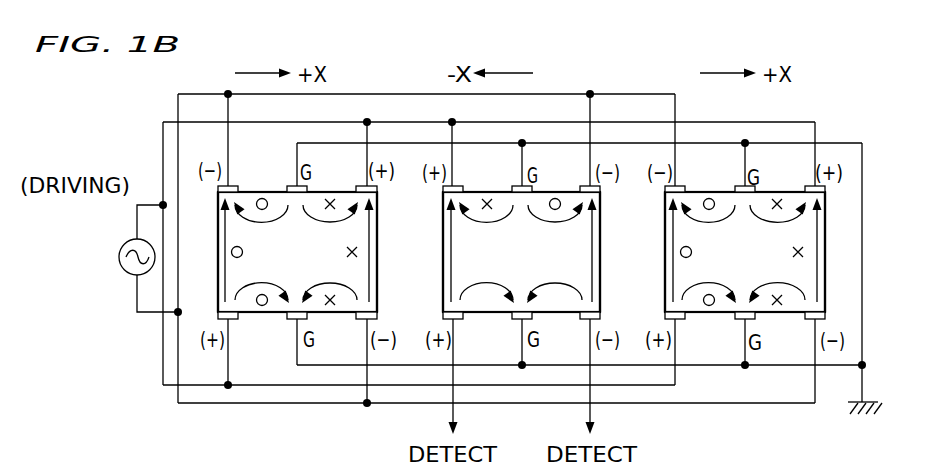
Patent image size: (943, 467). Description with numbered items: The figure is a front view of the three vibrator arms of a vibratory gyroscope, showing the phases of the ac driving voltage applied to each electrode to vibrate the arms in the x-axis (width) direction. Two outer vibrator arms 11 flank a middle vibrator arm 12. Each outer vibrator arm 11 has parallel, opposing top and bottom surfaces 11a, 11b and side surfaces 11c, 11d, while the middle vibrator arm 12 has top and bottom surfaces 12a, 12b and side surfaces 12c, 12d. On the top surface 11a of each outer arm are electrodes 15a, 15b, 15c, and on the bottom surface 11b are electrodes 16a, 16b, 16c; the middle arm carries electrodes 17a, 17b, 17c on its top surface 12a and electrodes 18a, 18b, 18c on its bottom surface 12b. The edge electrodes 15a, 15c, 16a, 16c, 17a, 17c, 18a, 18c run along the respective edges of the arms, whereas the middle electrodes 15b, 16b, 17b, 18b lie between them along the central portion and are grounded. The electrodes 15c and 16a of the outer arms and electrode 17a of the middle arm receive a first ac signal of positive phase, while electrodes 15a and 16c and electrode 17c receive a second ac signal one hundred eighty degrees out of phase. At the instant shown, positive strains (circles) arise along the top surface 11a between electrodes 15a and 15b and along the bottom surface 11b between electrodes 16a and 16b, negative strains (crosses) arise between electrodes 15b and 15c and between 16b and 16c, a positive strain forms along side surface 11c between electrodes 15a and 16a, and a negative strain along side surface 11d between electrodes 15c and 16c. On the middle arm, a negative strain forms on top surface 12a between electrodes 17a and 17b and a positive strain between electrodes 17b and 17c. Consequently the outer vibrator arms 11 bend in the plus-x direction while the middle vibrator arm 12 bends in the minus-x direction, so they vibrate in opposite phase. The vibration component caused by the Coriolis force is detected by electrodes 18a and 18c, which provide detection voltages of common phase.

The outer vibrator arm 11 is at (377, 224).
The top surface of outer vibrator arm 11a is at (255, 190).
The bottom surface of outer vibrator arm 11b is at (257, 316).
The side surface of outer vibrator arm 11c is at (218, 238).
The side surface of outer vibrator arm 11d is at (377, 292).
The middle vibrator arm 12 is at (601, 224).
The top surface of middle vibrator arm 12a is at (558, 188).
The bottom surface of middle vibrator arm 12b is at (480, 318).
The side surface of middle vibrator arm 12c is at (443, 258).
The side surface of middle vibrator arm 12d is at (601, 294).
The outer electrode 15a is at (218, 188).
The middle electrode 15b is at (289, 187).
The outer electrode 15c is at (356, 188).
The outer electrode 16a is at (218, 318).
The middle electrode 16b is at (287, 318).
The outer electrode 16c is at (356, 318).
The outer electrode 17a is at (443, 189).
The middle electrode 17b is at (508, 188).
The outer electrode 17c is at (603, 188).
The detection electrode 18a is at (443, 313).
The middle electrode 18b is at (511, 318).
The detection electrode 18c is at (580, 318).